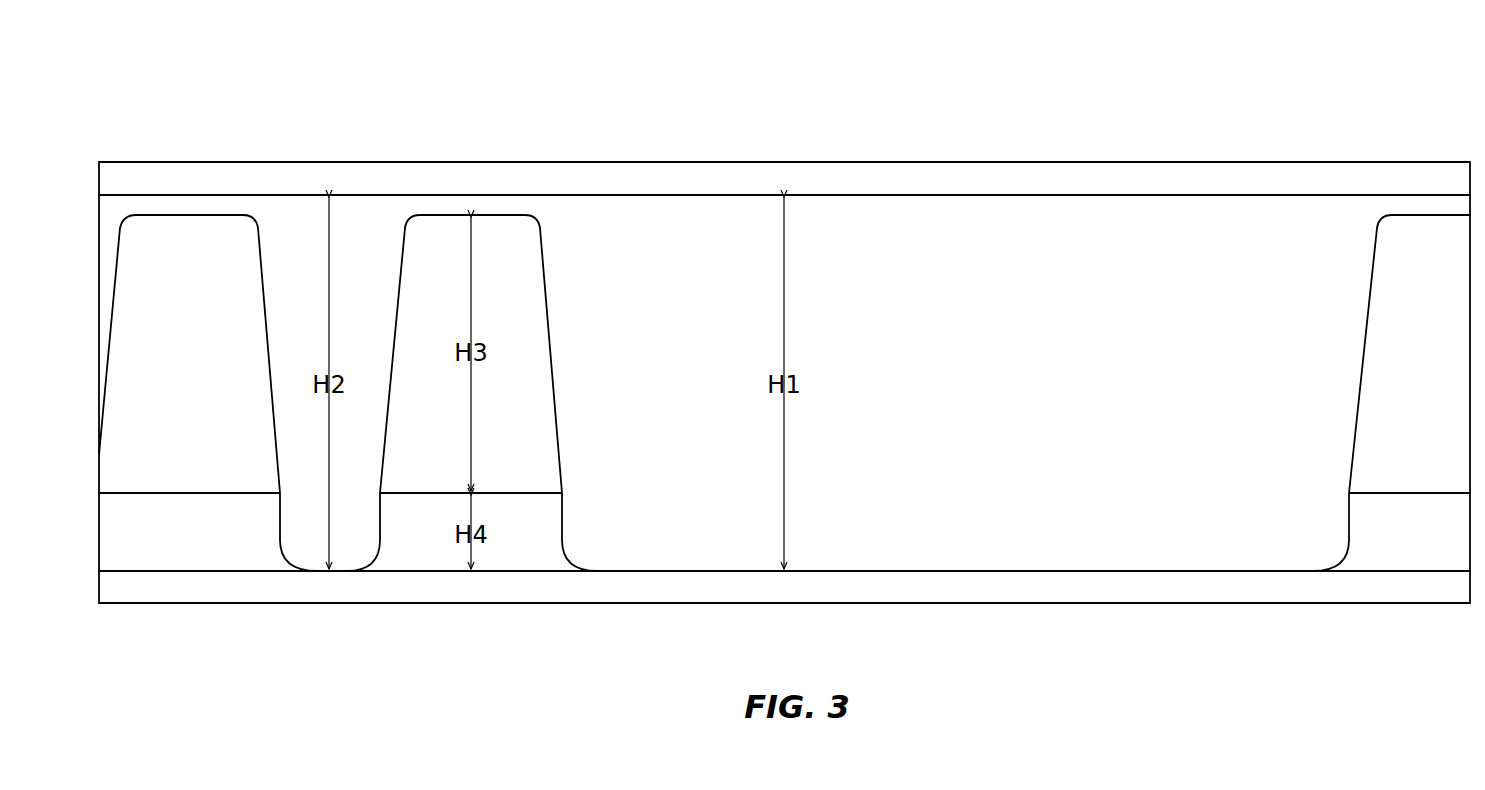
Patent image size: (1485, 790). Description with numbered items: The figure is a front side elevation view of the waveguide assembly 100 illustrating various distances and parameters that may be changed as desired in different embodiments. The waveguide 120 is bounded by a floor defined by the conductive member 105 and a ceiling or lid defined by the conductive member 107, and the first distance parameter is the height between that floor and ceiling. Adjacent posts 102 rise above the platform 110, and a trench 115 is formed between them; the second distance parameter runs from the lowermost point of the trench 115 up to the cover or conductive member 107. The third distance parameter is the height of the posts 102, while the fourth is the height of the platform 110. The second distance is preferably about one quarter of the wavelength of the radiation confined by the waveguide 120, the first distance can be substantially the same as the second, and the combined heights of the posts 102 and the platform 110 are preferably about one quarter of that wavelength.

The waveguide assembly 100 is at (1400, 66).
The post 102 is at (165, 258).
The conductive member 105 is at (1255, 584).
The conductive member 107 is at (872, 182).
The platform 110 is at (180, 517).
The trench 115 is at (308, 555).
The waveguide 120 is at (693, 243).